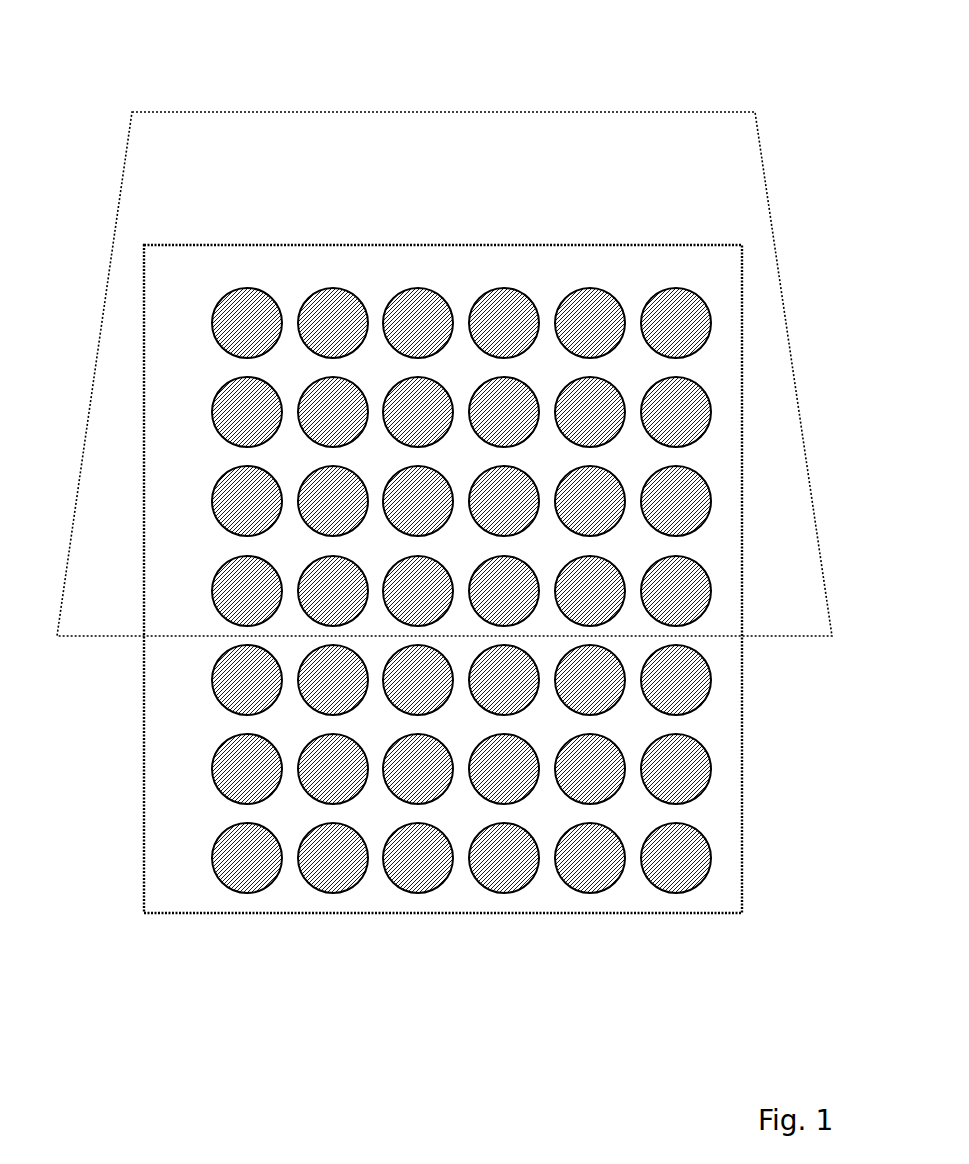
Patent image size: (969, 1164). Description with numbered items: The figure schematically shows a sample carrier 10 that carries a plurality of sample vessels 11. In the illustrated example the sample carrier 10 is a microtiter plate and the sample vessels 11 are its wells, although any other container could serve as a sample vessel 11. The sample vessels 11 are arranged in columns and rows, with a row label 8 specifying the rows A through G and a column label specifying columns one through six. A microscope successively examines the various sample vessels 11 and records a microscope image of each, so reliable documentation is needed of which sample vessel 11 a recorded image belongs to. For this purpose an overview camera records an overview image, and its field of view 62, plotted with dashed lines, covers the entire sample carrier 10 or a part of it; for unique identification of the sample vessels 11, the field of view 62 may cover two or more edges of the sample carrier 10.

The field of view 62 is at (380, 112).
The sample carrier 10 is at (507, 621).
The row label 8 is at (181, 891).
The sample vessels 11 is at (461, 643).